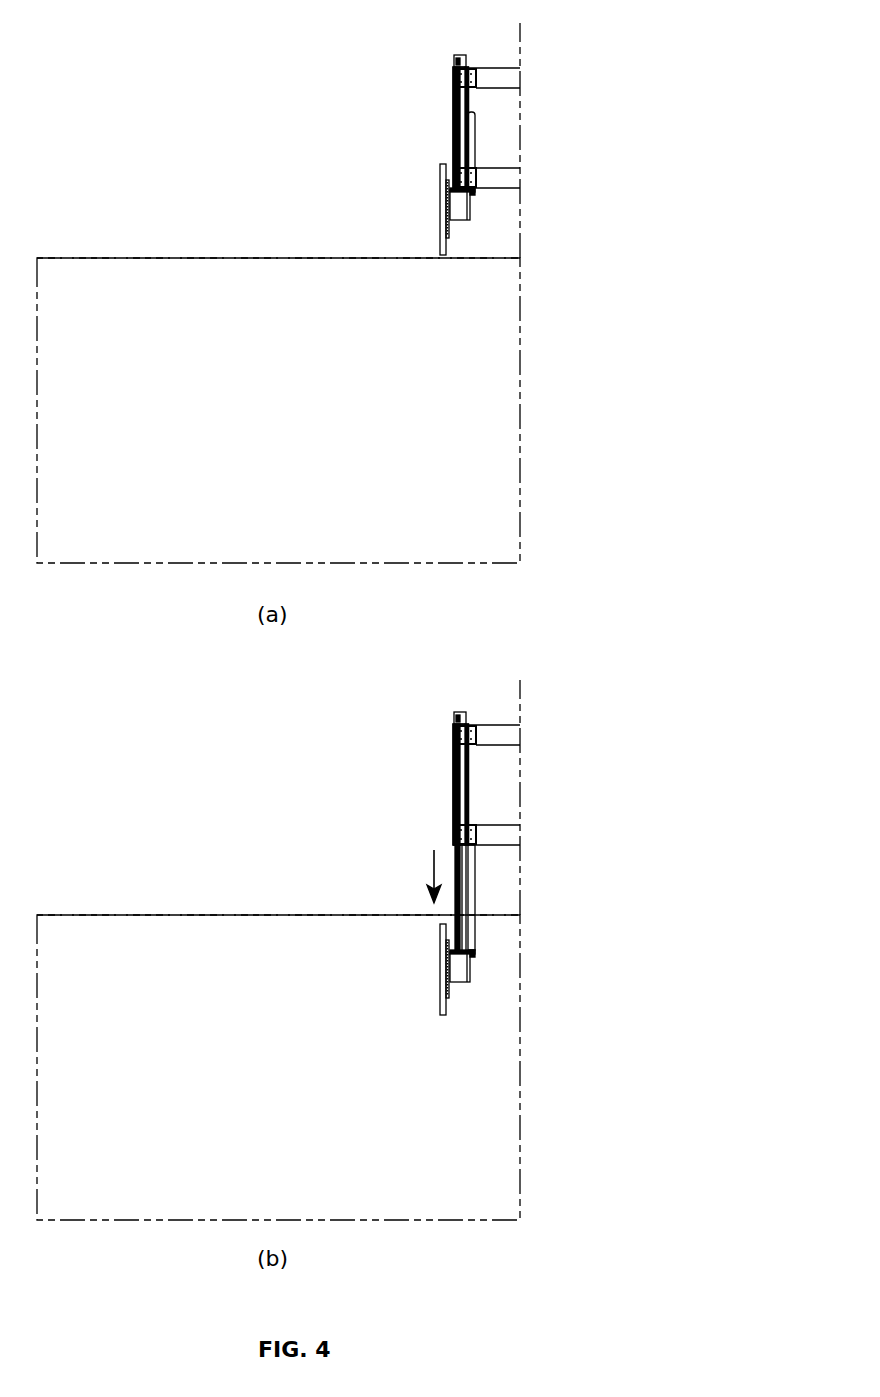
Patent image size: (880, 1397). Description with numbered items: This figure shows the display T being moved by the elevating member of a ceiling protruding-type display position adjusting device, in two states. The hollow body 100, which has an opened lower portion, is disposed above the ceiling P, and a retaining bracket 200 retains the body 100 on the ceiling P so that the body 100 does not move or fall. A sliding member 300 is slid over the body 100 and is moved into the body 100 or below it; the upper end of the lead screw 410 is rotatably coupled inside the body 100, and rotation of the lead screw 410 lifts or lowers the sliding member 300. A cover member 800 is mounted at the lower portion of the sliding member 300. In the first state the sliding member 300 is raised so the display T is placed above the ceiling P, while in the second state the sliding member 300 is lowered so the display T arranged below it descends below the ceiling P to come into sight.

The body 100 is at (453, 105).
The retaining bracket 200 is at (516, 431).
The sliding member 300 is at (470, 233).
The lead screw 410 is at (456, 61).
The cover member 800 is at (515, 589).
The display T is at (407, 589).
The ceiling P is at (127, 258).